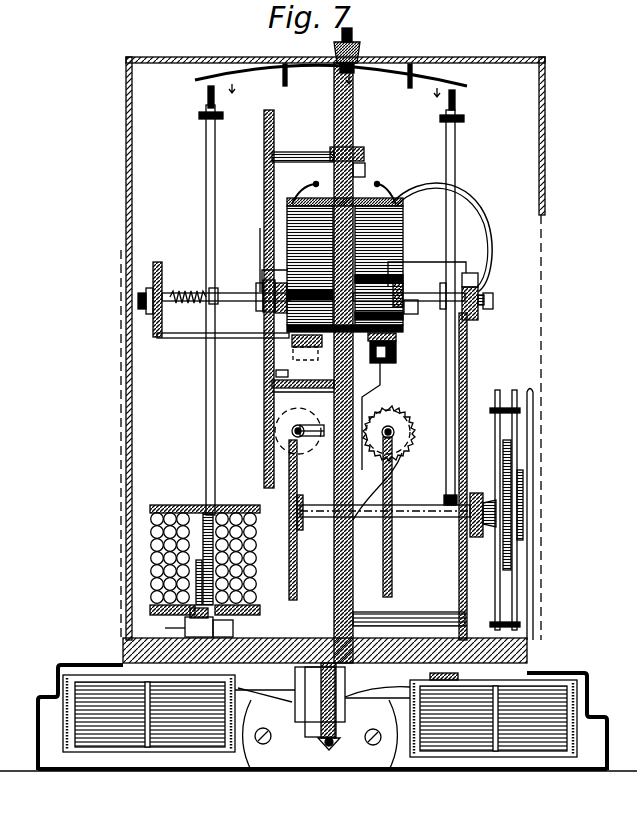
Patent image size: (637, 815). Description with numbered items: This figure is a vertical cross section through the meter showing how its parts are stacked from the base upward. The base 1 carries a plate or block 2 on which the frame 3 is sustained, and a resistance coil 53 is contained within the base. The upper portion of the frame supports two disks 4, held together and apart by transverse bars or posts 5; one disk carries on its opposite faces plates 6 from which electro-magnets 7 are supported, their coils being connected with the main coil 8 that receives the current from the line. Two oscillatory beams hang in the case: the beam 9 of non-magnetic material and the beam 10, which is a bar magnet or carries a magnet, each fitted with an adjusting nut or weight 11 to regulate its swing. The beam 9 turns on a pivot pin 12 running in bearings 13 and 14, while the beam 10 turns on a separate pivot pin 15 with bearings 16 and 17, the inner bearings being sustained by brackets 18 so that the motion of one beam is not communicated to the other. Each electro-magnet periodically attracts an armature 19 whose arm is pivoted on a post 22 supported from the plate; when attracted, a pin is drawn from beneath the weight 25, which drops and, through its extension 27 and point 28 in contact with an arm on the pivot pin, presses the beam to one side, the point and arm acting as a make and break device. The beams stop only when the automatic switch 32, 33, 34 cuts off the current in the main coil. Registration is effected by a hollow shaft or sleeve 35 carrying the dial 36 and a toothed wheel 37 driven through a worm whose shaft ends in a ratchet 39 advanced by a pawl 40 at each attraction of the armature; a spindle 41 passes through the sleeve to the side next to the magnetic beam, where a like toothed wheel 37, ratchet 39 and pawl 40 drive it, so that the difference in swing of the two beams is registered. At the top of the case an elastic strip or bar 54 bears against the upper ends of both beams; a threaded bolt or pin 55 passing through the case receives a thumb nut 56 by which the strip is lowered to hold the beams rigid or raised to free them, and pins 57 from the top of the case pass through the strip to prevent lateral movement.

The base 1 is at (37, 722).
The plate or block 2 is at (528, 662).
The frame 3 is at (333, 560).
The disks 4 is at (270, 114).
The transverse bars or posts 5 is at (297, 152).
The plates 6 is at (335, 148).
The electro-magnets 7 is at (288, 221).
The main coil 8 is at (152, 508).
The oscillatory beam 9 is at (456, 180).
The oscillatory beam 10 is at (206, 203).
The adjusting nut or weight 11 is at (208, 115).
The pivot pin 12 is at (460, 308).
The bearing 13 is at (410, 290).
The bearing 14 is at (494, 302).
The pivot pin 15 is at (228, 293).
The bearing 16 is at (146, 298).
The bearing 17 is at (262, 312).
The brackets 18 is at (290, 268).
The armature 19 is at (292, 343).
The post 22 is at (379, 286).
The weight 25 is at (413, 315).
The extension 27 is at (465, 252).
The point 28 is at (497, 250).
The automatic switch 32 is at (190, 586).
The automatic switch 33 is at (170, 628).
The automatic switch 34 is at (212, 641).
The hollow shaft or sleeve 35 is at (410, 506).
The dial 36 is at (515, 408).
The toothed wheel 37 is at (290, 552).
The ratchet 39 is at (275, 431).
The pawl 40 is at (384, 364).
The spindle 41 is at (402, 522).
The resistance coil 53 is at (110, 742).
The elastic strip or bar 54 is at (428, 76).
The threaded bolt or pin 55 is at (353, 33).
The thumb nut 56 is at (360, 53).
The pins 57 is at (283, 66).